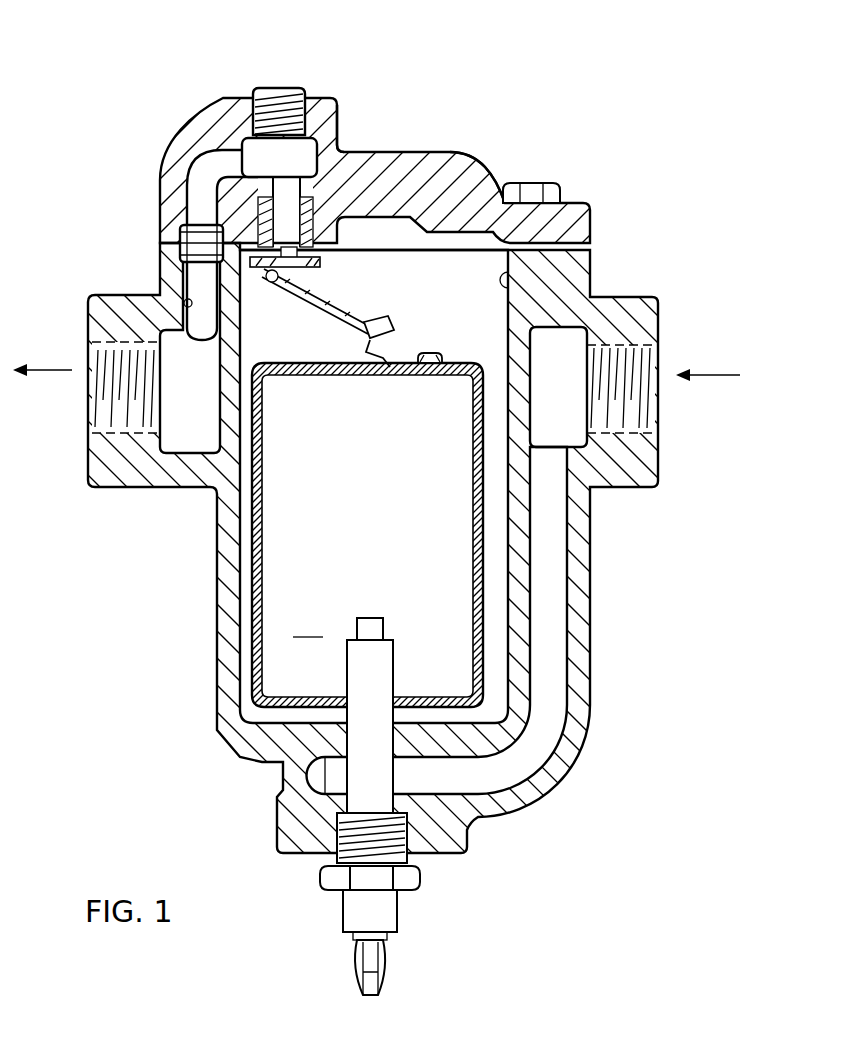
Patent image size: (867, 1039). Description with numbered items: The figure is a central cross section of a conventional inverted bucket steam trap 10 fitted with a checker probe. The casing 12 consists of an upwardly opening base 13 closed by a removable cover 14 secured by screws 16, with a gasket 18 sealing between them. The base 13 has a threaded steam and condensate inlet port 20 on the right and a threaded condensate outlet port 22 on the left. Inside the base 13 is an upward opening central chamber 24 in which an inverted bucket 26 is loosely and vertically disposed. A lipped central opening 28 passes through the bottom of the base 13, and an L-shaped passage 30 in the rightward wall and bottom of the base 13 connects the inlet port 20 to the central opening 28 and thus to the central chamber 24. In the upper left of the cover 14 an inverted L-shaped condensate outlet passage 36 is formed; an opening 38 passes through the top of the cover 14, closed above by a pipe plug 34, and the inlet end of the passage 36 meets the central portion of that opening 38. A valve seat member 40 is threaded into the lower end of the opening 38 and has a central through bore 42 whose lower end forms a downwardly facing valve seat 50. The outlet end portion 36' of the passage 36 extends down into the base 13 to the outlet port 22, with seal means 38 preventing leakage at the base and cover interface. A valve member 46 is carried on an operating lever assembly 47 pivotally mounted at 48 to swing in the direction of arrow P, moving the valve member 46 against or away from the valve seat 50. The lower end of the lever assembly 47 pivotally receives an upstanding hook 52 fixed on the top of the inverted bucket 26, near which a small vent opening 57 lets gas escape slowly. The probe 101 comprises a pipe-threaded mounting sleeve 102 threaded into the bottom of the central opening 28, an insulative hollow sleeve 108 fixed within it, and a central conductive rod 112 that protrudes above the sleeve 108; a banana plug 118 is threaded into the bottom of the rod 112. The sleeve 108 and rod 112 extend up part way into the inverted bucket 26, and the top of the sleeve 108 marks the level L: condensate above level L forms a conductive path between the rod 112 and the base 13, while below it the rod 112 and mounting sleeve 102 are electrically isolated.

The steam trap 10 is at (127, 150).
The casing 12 is at (407, 148).
The base 13 is at (582, 533).
The cover 14 is at (455, 160).
The screws 16 is at (530, 187).
The gasket 18 is at (180, 246).
The inlet port 20 is at (647, 418).
The outlet port 22 is at (100, 413).
The central chamber 24 is at (512, 292).
The inverted bucket 26 is at (480, 622).
The lipped central opening 28 is at (312, 772).
The L-shaped passage 30 is at (560, 628).
The pipe plug 34 is at (263, 107).
The condensate outlet passage 36 is at (194, 222).
The outlet end portion 36' is at (148, 282).
The opening 38 is at (287, 177).
The valve seat member 40 is at (320, 258).
The central through bore 42 is at (325, 195).
The valve member 46 is at (256, 282).
The operating lever assembly 47 is at (343, 307).
The pivot 48 is at (266, 338).
The valve seat 50 is at (290, 272).
The hook 52 is at (384, 326).
The vent opening 57 is at (434, 362).
The probe 101 is at (416, 910).
The mounting sleeve 102 is at (337, 851).
The insulative hollow sleeve 108 is at (387, 656).
The conductive rod 112 is at (377, 621).
The banana plug 118 is at (383, 970).
The level L is at (305, 636).
The arrow P is at (326, 324).